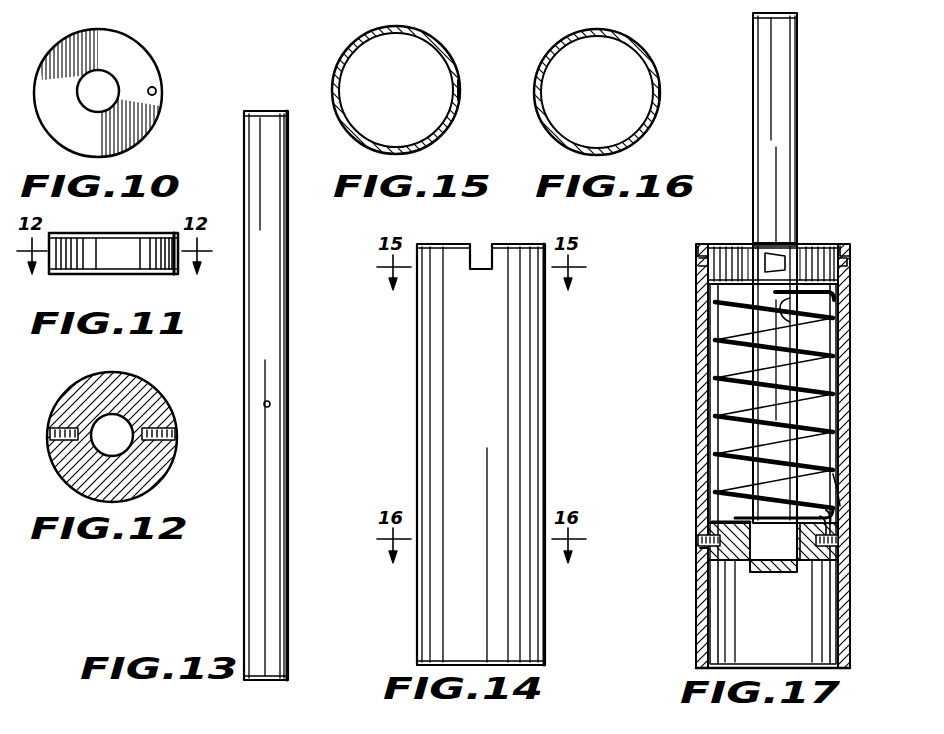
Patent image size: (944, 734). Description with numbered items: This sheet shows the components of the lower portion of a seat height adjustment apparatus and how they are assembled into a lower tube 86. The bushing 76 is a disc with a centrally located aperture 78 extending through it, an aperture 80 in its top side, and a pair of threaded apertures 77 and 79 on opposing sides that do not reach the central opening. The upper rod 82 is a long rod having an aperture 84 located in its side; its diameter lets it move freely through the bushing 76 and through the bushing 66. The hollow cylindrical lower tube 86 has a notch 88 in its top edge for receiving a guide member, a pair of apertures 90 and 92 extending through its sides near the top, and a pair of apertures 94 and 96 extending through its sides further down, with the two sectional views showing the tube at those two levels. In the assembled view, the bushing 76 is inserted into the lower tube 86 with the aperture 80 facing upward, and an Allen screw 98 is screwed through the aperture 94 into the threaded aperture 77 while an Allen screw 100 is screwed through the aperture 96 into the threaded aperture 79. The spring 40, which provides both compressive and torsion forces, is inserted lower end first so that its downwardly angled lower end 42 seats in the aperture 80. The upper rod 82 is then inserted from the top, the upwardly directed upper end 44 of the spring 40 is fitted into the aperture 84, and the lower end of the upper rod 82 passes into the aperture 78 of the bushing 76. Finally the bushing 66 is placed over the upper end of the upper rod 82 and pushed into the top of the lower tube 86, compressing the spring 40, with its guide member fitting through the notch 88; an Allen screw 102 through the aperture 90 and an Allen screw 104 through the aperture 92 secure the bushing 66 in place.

In FIG. 17, the spring 40 is at (840, 406).
In FIG. 17, the lower end of the spring 42 is at (842, 496).
In FIG. 17, the upper end of the spring 44 is at (842, 298).
In FIG. 17, the bushing 66 is at (734, 250).
In FIG. 10, the bushing 76 is at (88, 28).
In FIG. 11, the bushing 76 is at (88, 282).
In FIG. 12, the bushing 76 is at (98, 372).
In FIG. 17, the bushing 76 is at (744, 570).
In FIG. 12, the threaded aperture 77 is at (52, 434).
In FIG. 17, the threaded aperture 77 is at (708, 524).
In FIG. 10, the aperture 78 is at (114, 98).
In FIG. 12, the aperture 78 is at (128, 444).
In FIG. 12, the threaded aperture 79 is at (176, 432).
In FIG. 17, the threaded aperture 79 is at (806, 562).
In FIG. 10, the aperture 80 is at (155, 88).
In FIG. 17, the aperture 80 is at (838, 518).
In FIG. 13, the upper rod 82 is at (232, 575).
In FIG. 17, the upper rod 82 is at (798, 164).
In FIG. 13, the aperture 84 is at (270, 404).
In FIG. 14, the lower tube 86 is at (400, 586).
In FIG. 17, the lower tube 86 is at (698, 430).
In FIG. 14, the notch 88 is at (484, 256).
In FIG. 15, the notch 88 is at (396, 146).
In FIG. 15, the aperture 90 is at (332, 90).
In FIG. 17, the aperture 90 is at (704, 250).
In FIG. 15, the aperture 92 is at (460, 88).
In FIG. 17, the aperture 92 is at (846, 250).
In FIG. 16, the aperture 94 is at (536, 92).
In FIG. 17, the aperture 94 is at (700, 552).
In FIG. 16, the aperture 96 is at (660, 88).
In FIG. 17, the aperture 96 is at (840, 546).
In FIG. 17, the Allen screw 98 is at (698, 540).
In FIG. 17, the Allen screw 100 is at (842, 536).
In FIG. 17, the Allen screw 102 is at (700, 264).
In FIG. 17, the Allen screw 104 is at (846, 262).